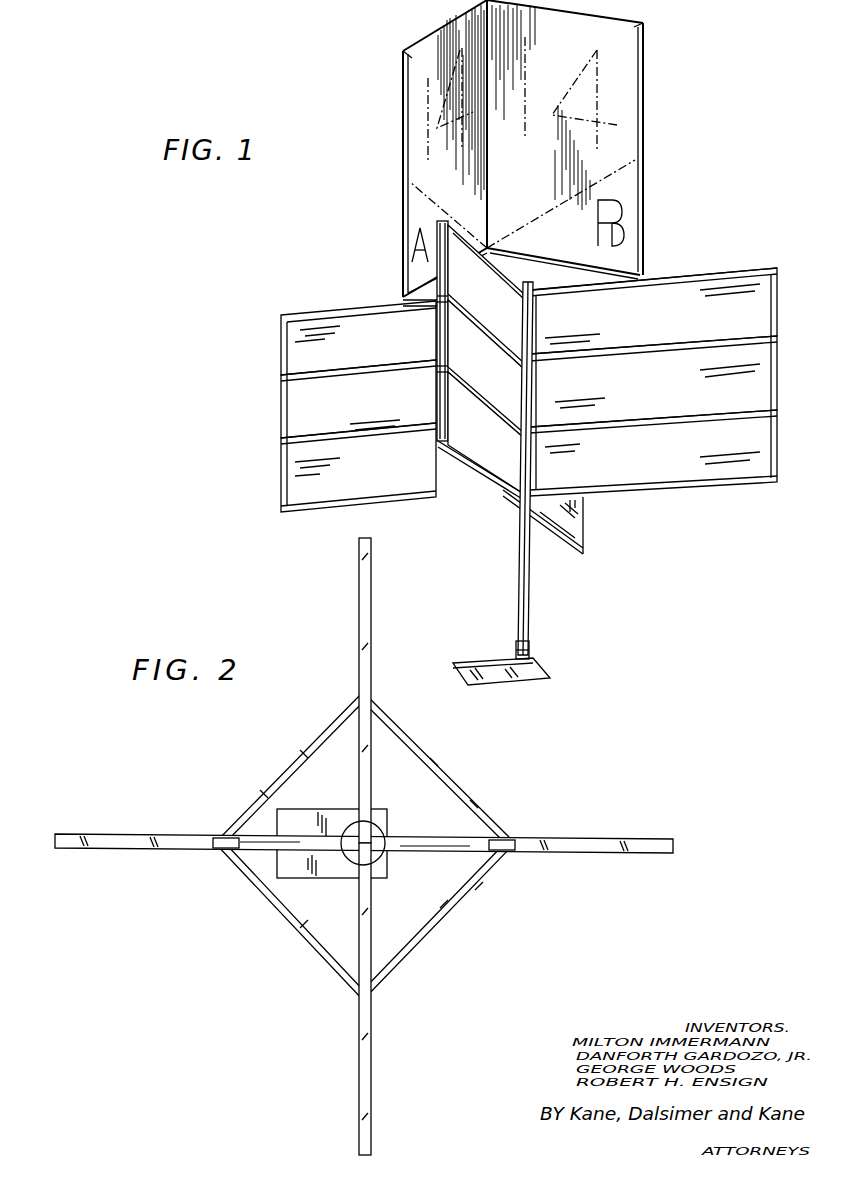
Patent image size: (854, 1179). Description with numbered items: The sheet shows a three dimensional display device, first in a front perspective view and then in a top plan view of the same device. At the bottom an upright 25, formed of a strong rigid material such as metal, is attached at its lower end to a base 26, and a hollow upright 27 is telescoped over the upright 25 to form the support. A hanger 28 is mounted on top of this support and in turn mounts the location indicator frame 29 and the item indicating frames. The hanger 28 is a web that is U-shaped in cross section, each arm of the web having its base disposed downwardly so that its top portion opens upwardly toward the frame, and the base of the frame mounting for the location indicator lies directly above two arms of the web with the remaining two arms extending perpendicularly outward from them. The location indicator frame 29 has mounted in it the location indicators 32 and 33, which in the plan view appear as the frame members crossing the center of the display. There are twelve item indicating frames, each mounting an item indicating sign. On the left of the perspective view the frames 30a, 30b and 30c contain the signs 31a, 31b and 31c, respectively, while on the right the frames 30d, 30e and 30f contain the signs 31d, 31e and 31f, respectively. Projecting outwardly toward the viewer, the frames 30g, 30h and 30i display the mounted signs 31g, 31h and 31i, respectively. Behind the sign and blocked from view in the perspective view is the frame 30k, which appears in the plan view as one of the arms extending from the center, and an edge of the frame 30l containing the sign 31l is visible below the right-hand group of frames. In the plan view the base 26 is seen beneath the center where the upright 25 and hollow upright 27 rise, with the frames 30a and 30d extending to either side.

In FIG. 1, the upright 25 is at (529, 654).
In FIG. 1, the base 26 is at (464, 664).
In FIG. 2, the base 26 is at (300, 872).
In FIG. 1, the hollow upright 27 is at (527, 614).
In FIG. 1, the hanger 28 is at (641, 284).
In FIG. 1, the location indicator frame 29 is at (640, 170).
In FIG. 2, the location indicator frame 29 is at (422, 843).
In FIG. 1, the item indicating frame 30a is at (289, 317).
In FIG. 2, the item indicating frame 30a is at (80, 834).
In FIG. 1, the item indicating frame 30b is at (292, 398).
In FIG. 1, the item indicating frame 30c is at (290, 468).
In FIG. 1, the item indicating frame 30d is at (778, 292).
In FIG. 2, the item indicating frame 30d is at (657, 839).
In FIG. 1, the item indicating frame 30e is at (778, 372).
In FIG. 1, the item indicating frame 30f is at (776, 446).
In FIG. 1, the item indicating frame 30g is at (476, 248).
In FIG. 2, the item indicating frame 30g is at (371, 1080).
In FIG. 1, the item indicating frame 30h is at (474, 318).
In FIG. 1, the item indicating frame 30i is at (481, 436).
In FIG. 2, the item indicating frame 30k is at (371, 586).
In FIG. 1, the item indicating frame 30l is at (590, 518).
In FIG. 1, the item indicating sign 31a is at (295, 347).
In FIG. 1, the item indicating sign 31b is at (293, 418).
In FIG. 1, the item indicating sign 31c is at (293, 488).
In FIG. 1, the item indicating sign 31d is at (765, 321).
In FIG. 1, the item indicating sign 31e is at (758, 396).
In FIG. 1, the item indicating sign 31f is at (760, 471).
In FIG. 1, the item indicating sign 31g is at (505, 288).
In FIG. 1, the item indicating sign 31h is at (510, 390).
In FIG. 1, the item indicating sign 31i is at (510, 473).
In FIG. 1, the item indicating sign 31l is at (583, 534).
In FIG. 1, the location indicator 32 is at (458, 36).
In FIG. 2, the location indicator 32 is at (305, 944).
In FIG. 2, the location indicator 33 is at (437, 764).